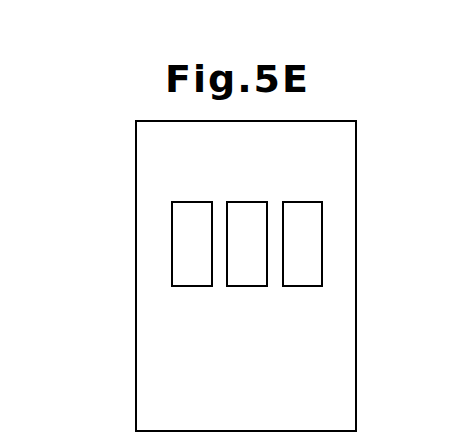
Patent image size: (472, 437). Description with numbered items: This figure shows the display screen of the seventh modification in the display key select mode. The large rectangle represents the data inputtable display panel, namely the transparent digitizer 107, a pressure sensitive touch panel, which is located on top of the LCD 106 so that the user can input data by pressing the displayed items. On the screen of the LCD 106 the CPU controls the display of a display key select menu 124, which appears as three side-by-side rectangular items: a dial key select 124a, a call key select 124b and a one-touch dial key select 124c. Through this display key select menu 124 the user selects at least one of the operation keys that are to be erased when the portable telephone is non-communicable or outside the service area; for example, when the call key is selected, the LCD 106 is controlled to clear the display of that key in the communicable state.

The digitizer 107 is at (282, 276).
The LCD 106 is at (356, 138).
The display key select menu 124 is at (205, 283).
The dial key select 124a is at (190, 286).
The call key select 124b is at (243, 286).
The one-touch dial key select 124c is at (305, 286).